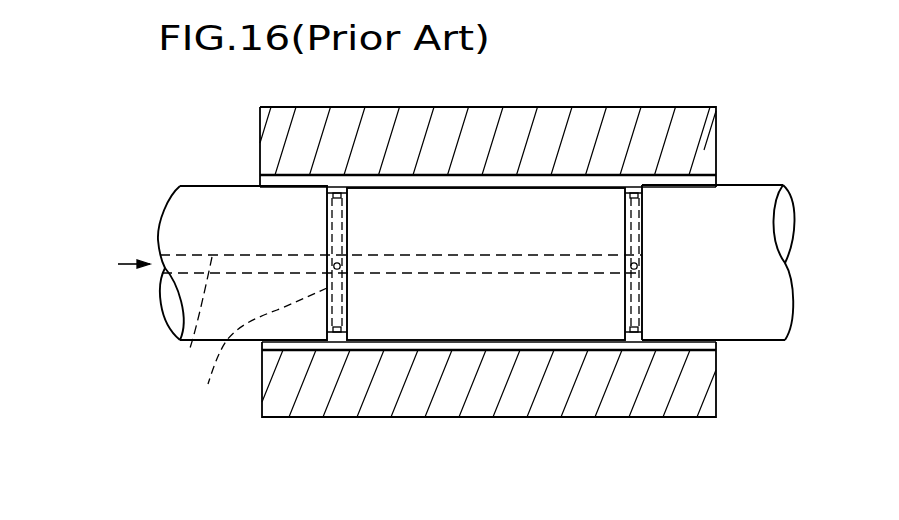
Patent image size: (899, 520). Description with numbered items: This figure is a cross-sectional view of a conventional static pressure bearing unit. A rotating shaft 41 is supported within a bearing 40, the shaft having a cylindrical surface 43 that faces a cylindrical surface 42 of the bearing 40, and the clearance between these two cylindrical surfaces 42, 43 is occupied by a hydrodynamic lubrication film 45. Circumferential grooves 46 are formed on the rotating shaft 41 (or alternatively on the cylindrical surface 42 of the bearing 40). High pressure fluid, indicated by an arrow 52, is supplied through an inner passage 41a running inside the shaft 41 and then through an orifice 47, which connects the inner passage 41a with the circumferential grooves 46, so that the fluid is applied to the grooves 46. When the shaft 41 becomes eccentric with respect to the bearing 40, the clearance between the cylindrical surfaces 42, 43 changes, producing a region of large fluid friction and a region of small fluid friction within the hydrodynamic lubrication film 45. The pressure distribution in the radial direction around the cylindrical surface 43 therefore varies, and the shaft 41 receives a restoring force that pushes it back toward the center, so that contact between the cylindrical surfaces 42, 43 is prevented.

The bearing 40 is at (448, 405).
The shaft 41 is at (182, 226).
The inner passage 41a is at (190, 348).
The cylindrical surface 42 is at (430, 176).
The cylindrical surface 43 is at (495, 187).
The hydrodynamic lubrication film 45 is at (533, 181).
The circumferential grooves 46 is at (333, 300).
The orifice 47 is at (327, 272).
The arrow 52 is at (132, 283).